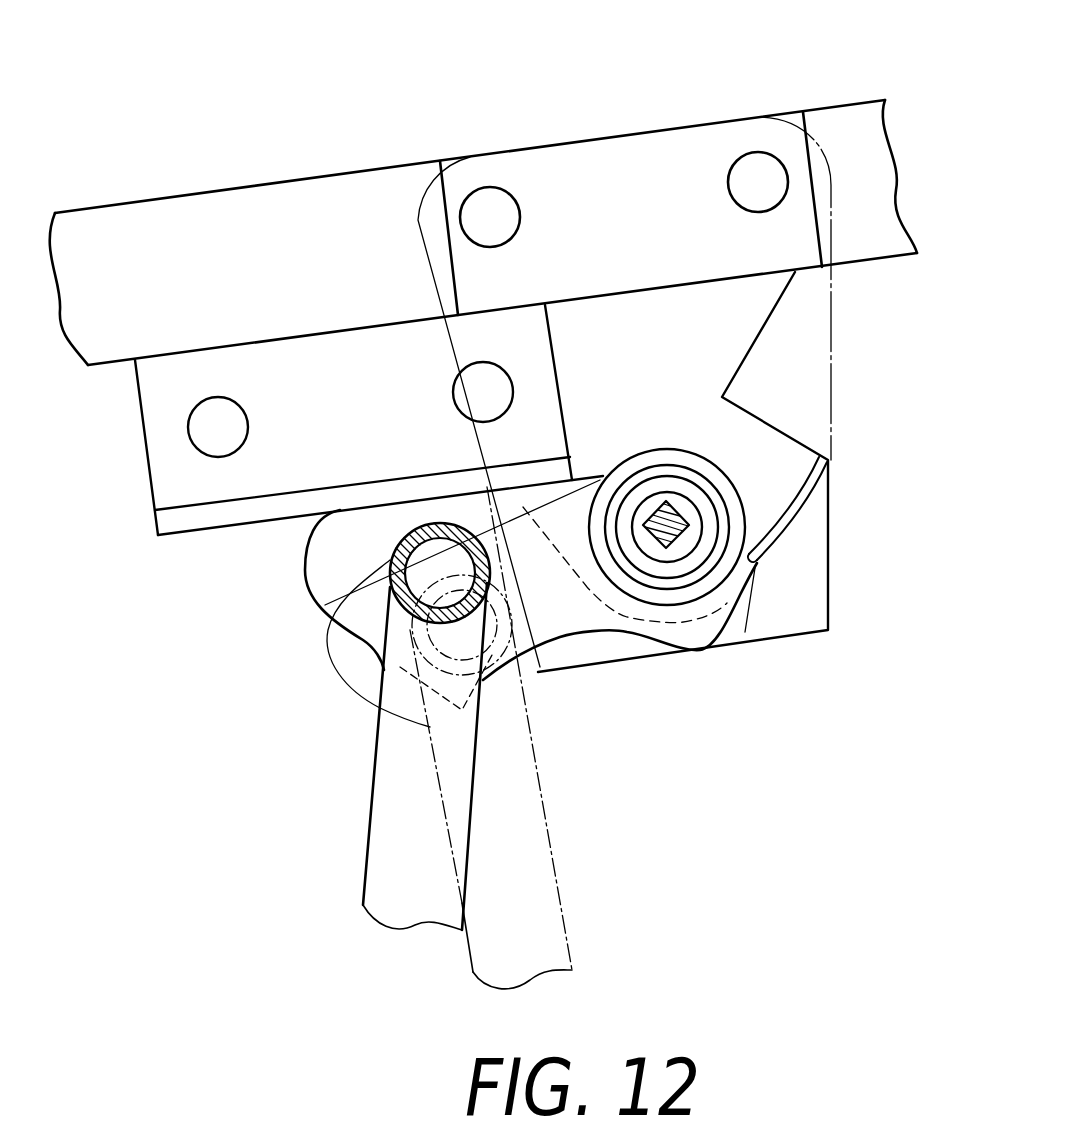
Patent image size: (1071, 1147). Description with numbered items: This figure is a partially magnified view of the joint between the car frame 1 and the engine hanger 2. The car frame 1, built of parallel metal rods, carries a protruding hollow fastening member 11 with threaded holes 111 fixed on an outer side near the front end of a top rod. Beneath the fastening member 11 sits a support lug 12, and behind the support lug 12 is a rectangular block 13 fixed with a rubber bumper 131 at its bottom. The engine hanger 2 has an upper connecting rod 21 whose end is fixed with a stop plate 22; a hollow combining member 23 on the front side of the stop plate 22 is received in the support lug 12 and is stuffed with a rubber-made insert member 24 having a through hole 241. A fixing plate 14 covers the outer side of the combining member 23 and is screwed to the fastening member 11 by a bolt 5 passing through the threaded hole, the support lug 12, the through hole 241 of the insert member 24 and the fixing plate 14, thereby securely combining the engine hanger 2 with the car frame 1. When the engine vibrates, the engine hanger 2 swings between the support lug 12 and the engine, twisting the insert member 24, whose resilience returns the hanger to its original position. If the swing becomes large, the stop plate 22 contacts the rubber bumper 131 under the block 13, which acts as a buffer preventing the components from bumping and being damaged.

The car frame 1 is at (380, 137).
The fastening member 11 is at (617, 180).
The threaded holes 111 is at (760, 173).
The support lug 12 is at (727, 325).
The rectangular block 13 is at (182, 387).
The rubber bumper 131 is at (225, 510).
The fixing plate 14 is at (780, 388).
The engine hanger 2 is at (385, 867).
The upper connecting rod 21 is at (405, 608).
The stop plate 22 is at (337, 573).
The hollow combining member 23 is at (735, 537).
The insert member 24 is at (705, 508).
The through hole 241 is at (683, 537).
The bolt 5 is at (672, 527).